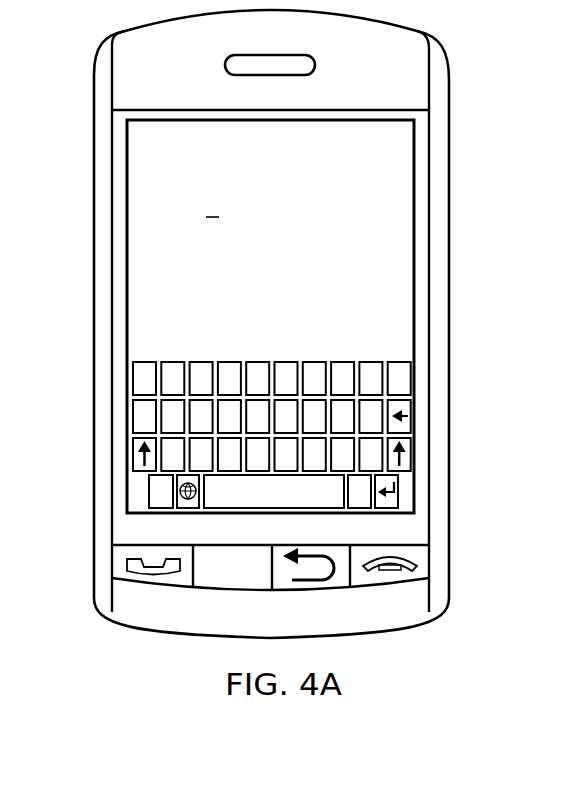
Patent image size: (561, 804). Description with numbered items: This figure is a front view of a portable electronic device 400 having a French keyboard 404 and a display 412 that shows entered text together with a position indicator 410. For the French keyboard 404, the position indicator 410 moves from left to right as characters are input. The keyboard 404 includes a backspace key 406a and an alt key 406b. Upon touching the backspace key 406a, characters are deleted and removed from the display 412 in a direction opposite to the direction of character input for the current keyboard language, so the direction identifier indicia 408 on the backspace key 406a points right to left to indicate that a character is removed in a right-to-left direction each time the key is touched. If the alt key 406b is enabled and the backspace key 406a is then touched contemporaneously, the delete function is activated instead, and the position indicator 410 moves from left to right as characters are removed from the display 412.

The portable electronic device 400 is at (445, 658).
The keyboard 404 is at (133, 363).
The backspace key 406a is at (412, 413).
The alt key 406b is at (162, 507).
The direction identifier indicia 408 is at (411, 417).
The position indicator 410 is at (217, 218).
The display 412 is at (137, 205).